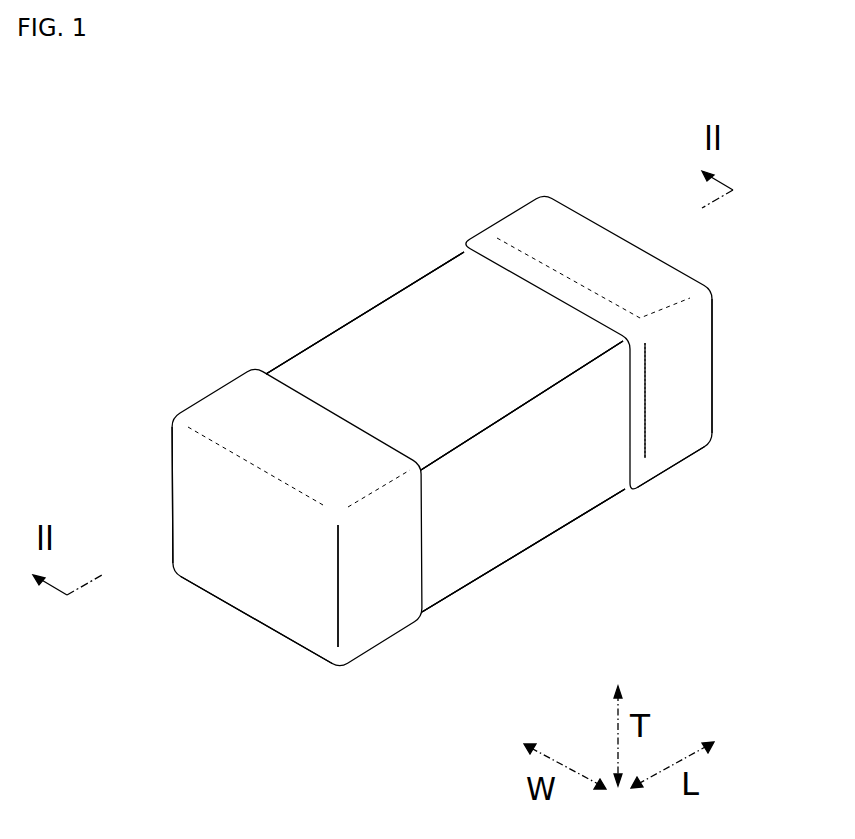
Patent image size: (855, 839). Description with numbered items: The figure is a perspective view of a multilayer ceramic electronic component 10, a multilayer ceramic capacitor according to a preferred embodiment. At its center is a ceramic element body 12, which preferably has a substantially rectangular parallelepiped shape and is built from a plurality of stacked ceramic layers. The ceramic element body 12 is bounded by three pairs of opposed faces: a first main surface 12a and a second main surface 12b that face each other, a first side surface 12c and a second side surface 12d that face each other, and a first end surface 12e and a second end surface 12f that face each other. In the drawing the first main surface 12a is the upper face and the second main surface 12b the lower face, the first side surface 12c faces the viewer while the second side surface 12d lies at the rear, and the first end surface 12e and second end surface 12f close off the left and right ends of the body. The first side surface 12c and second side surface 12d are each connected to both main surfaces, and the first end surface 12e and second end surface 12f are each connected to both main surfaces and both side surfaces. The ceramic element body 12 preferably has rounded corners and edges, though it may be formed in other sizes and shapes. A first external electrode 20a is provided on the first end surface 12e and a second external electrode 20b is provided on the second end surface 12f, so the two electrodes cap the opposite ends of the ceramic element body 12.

The multilayer ceramic electronic component 10 is at (168, 138).
The ceramic element body 12 is at (363, 308).
The first main surface 12a is at (310, 380).
The second main surface 12b is at (473, 577).
The first side surface 12c is at (530, 520).
The second side surface 12d is at (427, 312).
The first end surface 12e is at (290, 580).
The second end surface 12f is at (693, 383).
The first external electrode 20a is at (203, 390).
The second external electrode 20b is at (493, 210).